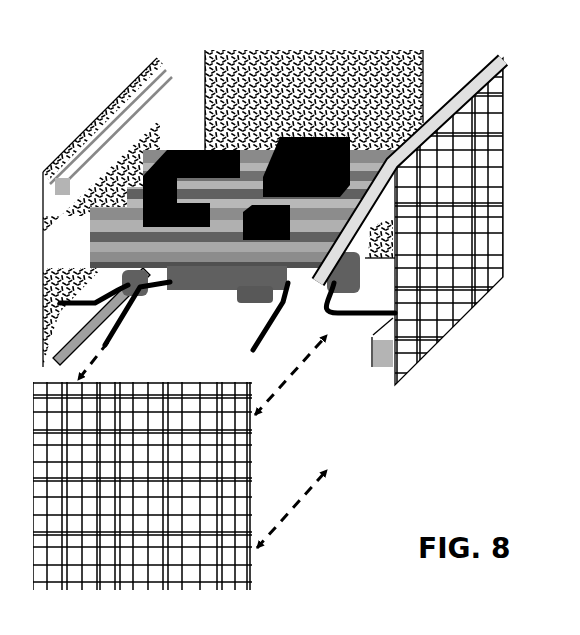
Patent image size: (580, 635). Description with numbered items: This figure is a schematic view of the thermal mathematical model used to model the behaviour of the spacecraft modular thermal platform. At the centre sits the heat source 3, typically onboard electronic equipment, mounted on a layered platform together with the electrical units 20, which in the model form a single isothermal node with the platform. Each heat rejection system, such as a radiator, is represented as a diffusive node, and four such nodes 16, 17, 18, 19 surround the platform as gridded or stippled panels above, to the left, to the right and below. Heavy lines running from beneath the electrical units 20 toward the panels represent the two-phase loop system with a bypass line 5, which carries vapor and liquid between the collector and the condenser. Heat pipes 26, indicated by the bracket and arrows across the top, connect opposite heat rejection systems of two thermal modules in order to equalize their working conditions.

The heat pipes 26 is at (303, 65).
The diffusive node 16 is at (314, 102).
The heat source 3 is at (246, 188).
The electrical units 20 is at (250, 226).
The diffusive node 19 is at (101, 212).
The diffusive node 17 is at (410, 221).
The diffusive node 18 is at (142, 486).
The two-phase loop system with a bypass line 5 is at (260, 308).